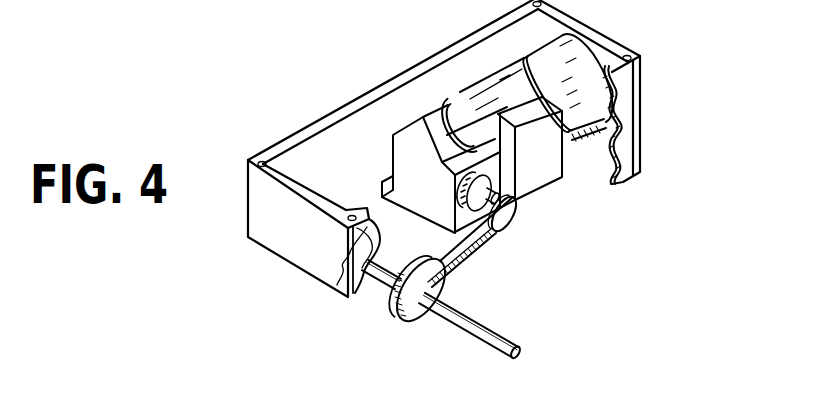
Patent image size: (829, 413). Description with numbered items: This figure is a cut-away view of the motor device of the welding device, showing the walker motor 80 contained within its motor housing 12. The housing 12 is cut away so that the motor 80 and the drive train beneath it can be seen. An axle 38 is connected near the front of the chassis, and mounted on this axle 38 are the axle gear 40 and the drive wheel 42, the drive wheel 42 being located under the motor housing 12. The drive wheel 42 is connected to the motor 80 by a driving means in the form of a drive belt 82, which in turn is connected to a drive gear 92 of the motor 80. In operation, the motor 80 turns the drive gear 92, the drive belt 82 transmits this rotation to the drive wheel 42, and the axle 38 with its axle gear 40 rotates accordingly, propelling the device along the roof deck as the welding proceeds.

The motor housing 12 is at (633, 101).
The axle 38 is at (487, 330).
The axle gear 40 is at (413, 310).
The drive wheel 42 is at (340, 283).
The walker motor 80 is at (593, 128).
The drive belt 82 is at (478, 265).
The drive gear 92 is at (509, 210).